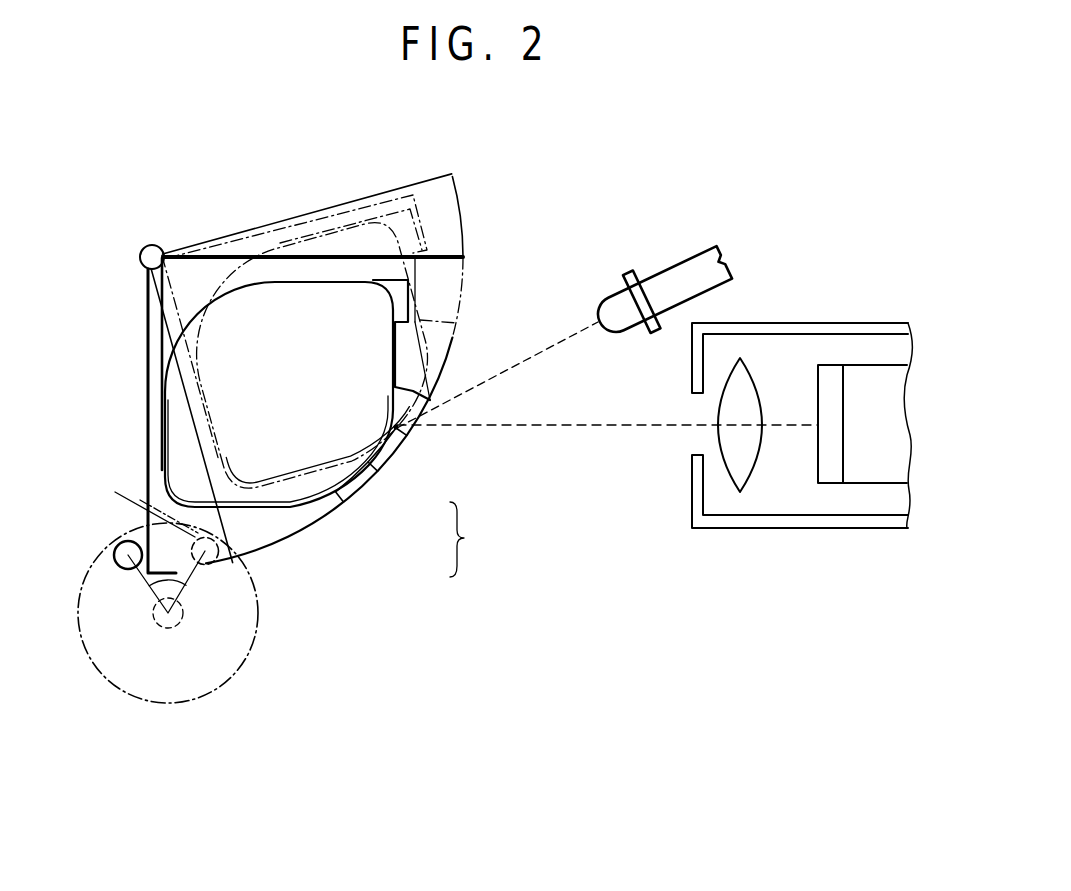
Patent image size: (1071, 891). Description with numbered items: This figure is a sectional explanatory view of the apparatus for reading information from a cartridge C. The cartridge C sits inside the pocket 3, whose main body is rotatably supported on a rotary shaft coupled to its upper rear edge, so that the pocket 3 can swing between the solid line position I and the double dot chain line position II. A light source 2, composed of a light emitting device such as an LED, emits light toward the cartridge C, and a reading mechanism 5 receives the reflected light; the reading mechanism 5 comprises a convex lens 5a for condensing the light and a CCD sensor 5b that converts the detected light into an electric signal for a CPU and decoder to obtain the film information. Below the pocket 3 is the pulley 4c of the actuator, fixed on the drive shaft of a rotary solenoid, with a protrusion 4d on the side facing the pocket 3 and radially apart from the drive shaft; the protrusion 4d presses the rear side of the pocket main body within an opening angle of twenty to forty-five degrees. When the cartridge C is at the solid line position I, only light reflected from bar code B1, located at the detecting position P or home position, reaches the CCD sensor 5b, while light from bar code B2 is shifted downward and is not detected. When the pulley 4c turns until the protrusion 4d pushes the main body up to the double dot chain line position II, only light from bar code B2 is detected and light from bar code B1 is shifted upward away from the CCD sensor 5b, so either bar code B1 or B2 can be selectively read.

The pocket 3 is at (211, 211).
The solid line position I is at (150, 391).
The double dot chain line position II is at (165, 323).
The cartridge C is at (273, 300).
The light source 2 is at (613, 298).
The reading mechanism 5 is at (720, 540).
The convex lens 5a is at (742, 372).
The CCD sensor 5b is at (828, 372).
The detecting position P is at (398, 432).
The bar code B1 is at (390, 444).
The bar code B2 is at (362, 478).
The protrusion 4d is at (126, 540).
The pulley 4c is at (240, 658).